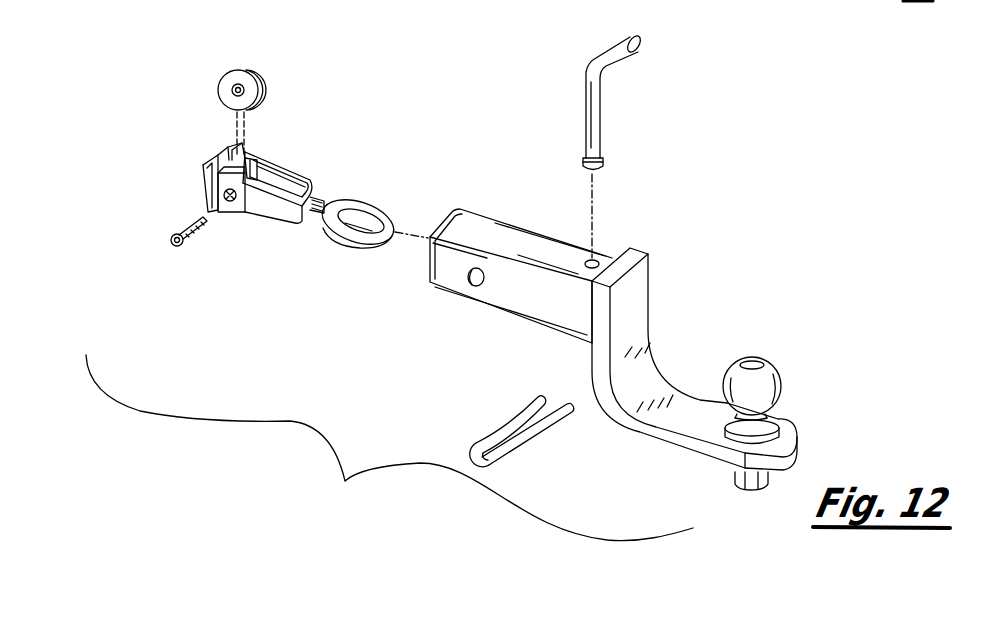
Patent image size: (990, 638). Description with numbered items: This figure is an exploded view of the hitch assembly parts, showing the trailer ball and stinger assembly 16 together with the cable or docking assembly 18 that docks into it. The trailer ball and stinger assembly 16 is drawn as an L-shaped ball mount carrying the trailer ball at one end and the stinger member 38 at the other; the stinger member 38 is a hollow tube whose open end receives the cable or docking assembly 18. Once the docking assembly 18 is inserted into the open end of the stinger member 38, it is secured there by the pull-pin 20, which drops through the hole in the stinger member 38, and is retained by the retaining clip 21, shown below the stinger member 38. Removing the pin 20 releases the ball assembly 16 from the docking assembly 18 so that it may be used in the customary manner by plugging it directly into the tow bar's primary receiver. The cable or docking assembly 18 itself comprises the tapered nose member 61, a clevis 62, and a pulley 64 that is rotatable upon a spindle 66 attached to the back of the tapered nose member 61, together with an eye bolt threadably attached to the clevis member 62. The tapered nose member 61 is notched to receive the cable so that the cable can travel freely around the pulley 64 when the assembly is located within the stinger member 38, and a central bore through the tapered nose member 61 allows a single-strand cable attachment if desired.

The trailer ball and stinger assembly 16 is at (686, 318).
The cable or docking assembly 18 is at (328, 116).
The pin 20 is at (604, 104).
The retaining clip 21 is at (483, 441).
The stinger member 38 is at (513, 292).
The tapered nose member 61 is at (211, 162).
The clevis 62 is at (267, 202).
The pulley 64 is at (251, 62).
The spindle 66 is at (172, 232).